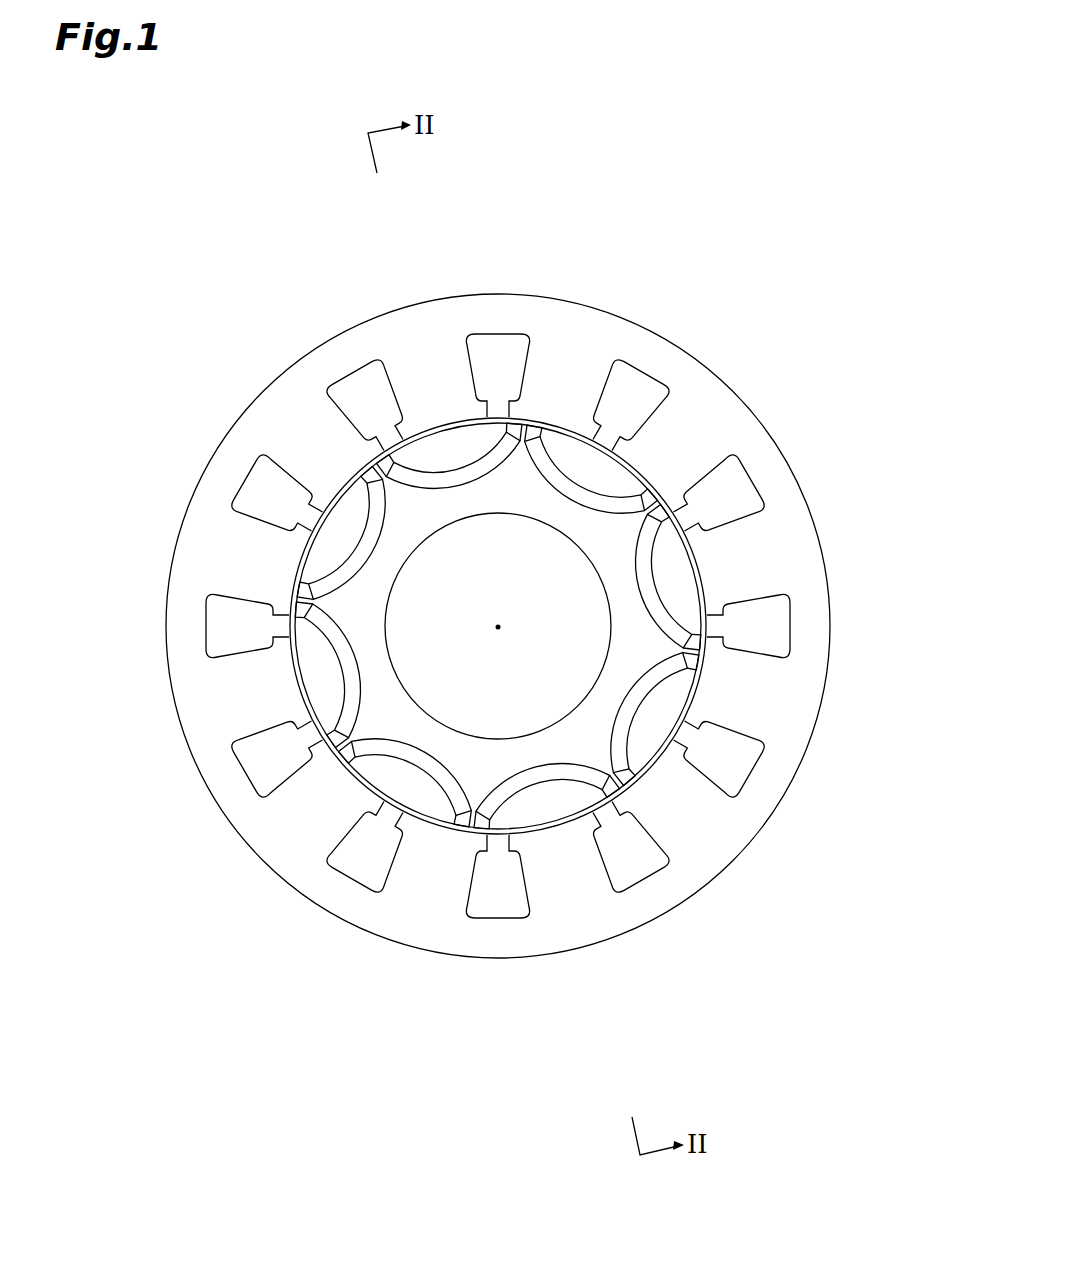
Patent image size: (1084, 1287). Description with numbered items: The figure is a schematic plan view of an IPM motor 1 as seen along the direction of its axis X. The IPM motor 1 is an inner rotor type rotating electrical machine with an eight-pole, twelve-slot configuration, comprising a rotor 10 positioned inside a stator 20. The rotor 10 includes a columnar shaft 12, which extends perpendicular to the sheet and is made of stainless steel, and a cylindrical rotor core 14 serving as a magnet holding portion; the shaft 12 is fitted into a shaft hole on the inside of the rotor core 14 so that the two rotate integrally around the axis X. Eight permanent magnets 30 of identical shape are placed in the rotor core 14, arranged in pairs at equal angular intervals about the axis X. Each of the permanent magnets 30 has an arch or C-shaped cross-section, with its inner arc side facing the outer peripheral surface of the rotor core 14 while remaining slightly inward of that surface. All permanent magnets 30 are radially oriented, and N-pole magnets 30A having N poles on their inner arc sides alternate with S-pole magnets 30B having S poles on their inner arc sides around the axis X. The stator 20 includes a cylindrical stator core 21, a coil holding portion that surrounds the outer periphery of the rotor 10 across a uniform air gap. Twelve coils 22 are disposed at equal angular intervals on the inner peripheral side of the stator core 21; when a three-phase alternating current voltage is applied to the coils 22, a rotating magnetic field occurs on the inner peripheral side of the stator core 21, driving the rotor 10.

The IPM motor 1 is at (118, 270).
The rotor 10 is at (710, 556).
The shaft 12 is at (387, 628).
The rotor core 14 is at (680, 700).
The stator 20 is at (376, 308).
The stator core 21 is at (302, 370).
The coils 22 is at (366, 362).
The permanent magnets 30 is at (501, 650).
The N-pole magnets 30A is at (557, 467).
The S-pole magnets 30B is at (441, 470).